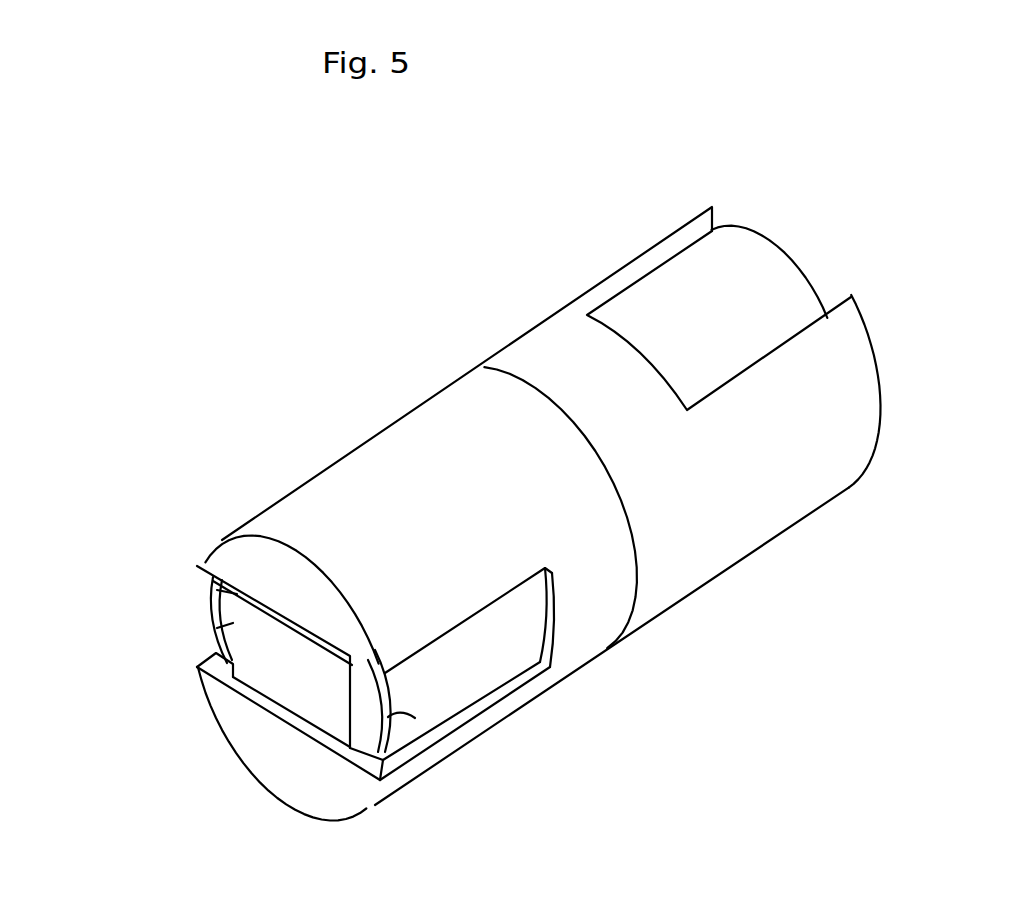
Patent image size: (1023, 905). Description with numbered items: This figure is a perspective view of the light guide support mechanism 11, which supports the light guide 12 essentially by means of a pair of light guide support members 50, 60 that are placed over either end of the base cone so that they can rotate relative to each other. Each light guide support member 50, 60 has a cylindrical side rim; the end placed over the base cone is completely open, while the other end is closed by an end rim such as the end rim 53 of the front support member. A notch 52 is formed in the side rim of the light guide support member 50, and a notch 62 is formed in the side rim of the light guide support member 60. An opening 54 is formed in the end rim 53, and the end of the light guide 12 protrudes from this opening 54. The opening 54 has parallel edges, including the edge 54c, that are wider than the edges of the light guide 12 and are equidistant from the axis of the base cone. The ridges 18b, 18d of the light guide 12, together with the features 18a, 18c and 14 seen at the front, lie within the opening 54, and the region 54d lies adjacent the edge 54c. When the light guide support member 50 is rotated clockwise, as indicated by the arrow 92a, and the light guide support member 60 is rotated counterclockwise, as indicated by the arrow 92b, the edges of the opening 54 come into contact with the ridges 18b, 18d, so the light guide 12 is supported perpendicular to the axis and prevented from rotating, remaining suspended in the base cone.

The light guide support mechanism 11 is at (336, 283).
The light guide 12 is at (217, 630).
The holder body 14 is at (277, 665).
The engaging tab 18a is at (217, 590).
The ridge 18b is at (376, 650).
The engaging tab 18c is at (395, 714).
The ridge 18d is at (203, 687).
The light guide support member 50 is at (330, 461).
The notch 52 is at (462, 683).
The end rim 53 is at (253, 557).
The opening 54 is at (365, 700).
The edge 54c is at (367, 705).
The tray surface 54d is at (390, 717).
The light guide support member 60 is at (520, 333).
The notch 62 is at (673, 290).
The arrow 92a is at (178, 757).
The arrow 92b is at (803, 154).